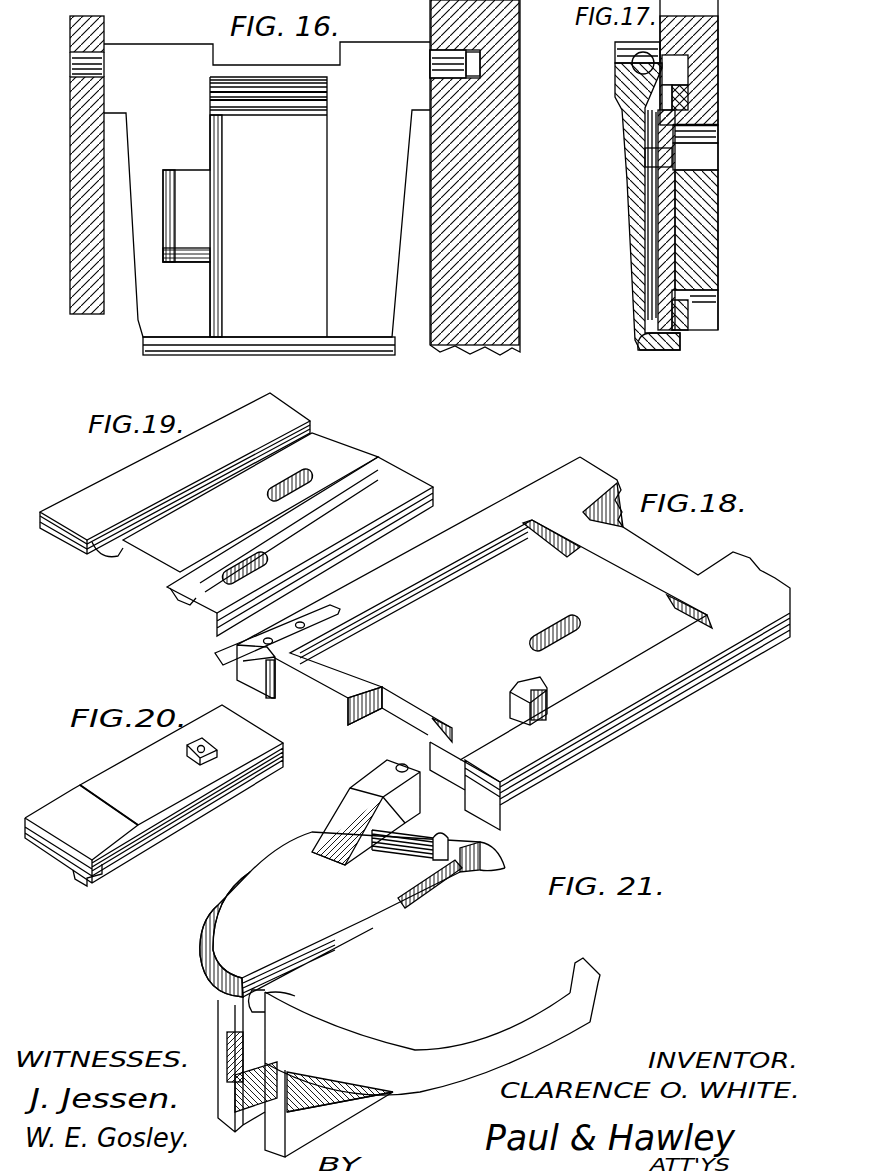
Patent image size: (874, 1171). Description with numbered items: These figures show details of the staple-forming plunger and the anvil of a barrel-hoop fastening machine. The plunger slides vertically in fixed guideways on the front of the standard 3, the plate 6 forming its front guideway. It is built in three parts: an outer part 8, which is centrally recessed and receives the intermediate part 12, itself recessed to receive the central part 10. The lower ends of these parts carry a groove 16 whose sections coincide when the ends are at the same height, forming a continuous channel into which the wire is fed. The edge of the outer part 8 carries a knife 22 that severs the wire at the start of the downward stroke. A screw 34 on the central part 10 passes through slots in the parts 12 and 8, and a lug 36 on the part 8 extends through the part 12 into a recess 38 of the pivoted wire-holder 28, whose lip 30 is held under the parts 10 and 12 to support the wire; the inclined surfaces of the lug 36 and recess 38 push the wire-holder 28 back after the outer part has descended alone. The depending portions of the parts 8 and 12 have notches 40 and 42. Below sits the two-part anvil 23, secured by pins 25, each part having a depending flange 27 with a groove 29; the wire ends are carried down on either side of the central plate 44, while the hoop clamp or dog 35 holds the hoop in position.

In FIG. 16, the standard 3 is at (518, 168).
In FIG. 16, the plate 6 is at (78, 161).
In FIG. 17, the outer part of the plunger 8 is at (718, 82).
In FIG. 18, the outer part of the plunger 8 is at (513, 631).
In FIG. 17, the central part of the plunger 10 is at (660, 270).
In FIG. 20, the central part of the plunger 10 is at (181, 765).
In FIG. 17, the intermediate part of the plunger 12 is at (685, 232).
In FIG. 19, the intermediate part of the plunger 12 is at (250, 512).
In FIG. 17, the groove 16 is at (688, 320).
In FIG. 19, the groove 16 is at (167, 602).
In FIG. 18, the groove 16 is at (505, 795).
In FIG. 20, the groove 16 is at (78, 872).
In FIG. 18, the knife 22 is at (235, 659).
In FIG. 21, the anvil 23 is at (400, 963).
In FIG. 21, the pins 25 is at (294, 993).
In FIG. 21, the depending flange 27 is at (222, 1100).
In FIG. 16, the wire-holder 28 is at (267, 189).
In FIG. 17, the wire-holder 28 is at (630, 248).
In FIG. 21, the groove 29 is at (228, 1065).
In FIG. 16, the lip 30 is at (353, 346).
In FIG. 17, the lip 30 is at (668, 352).
In FIG. 17, the screw 34 is at (708, 157).
In FIG. 20, the screw 34 is at (187, 748).
In FIG. 21, the hoop clamp or dog 35 is at (367, 777).
In FIG. 18, the lug 36 is at (547, 689).
In FIG. 16, the recess 38 is at (245, 207).
In FIG. 18, the notch 40 is at (297, 650).
In FIG. 19, the notch 42 is at (110, 524).
In FIG. 21, the central plate 44 is at (410, 895).